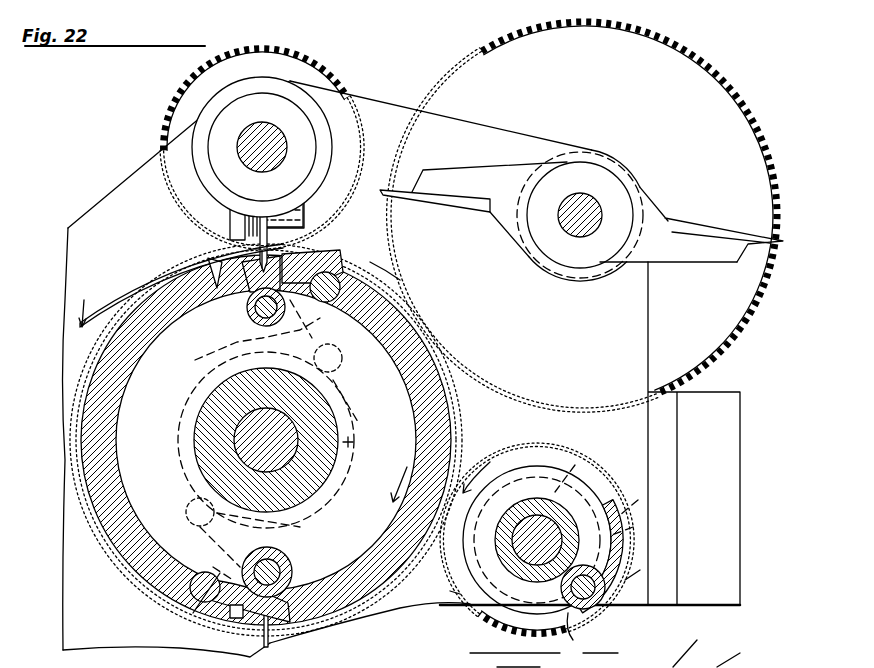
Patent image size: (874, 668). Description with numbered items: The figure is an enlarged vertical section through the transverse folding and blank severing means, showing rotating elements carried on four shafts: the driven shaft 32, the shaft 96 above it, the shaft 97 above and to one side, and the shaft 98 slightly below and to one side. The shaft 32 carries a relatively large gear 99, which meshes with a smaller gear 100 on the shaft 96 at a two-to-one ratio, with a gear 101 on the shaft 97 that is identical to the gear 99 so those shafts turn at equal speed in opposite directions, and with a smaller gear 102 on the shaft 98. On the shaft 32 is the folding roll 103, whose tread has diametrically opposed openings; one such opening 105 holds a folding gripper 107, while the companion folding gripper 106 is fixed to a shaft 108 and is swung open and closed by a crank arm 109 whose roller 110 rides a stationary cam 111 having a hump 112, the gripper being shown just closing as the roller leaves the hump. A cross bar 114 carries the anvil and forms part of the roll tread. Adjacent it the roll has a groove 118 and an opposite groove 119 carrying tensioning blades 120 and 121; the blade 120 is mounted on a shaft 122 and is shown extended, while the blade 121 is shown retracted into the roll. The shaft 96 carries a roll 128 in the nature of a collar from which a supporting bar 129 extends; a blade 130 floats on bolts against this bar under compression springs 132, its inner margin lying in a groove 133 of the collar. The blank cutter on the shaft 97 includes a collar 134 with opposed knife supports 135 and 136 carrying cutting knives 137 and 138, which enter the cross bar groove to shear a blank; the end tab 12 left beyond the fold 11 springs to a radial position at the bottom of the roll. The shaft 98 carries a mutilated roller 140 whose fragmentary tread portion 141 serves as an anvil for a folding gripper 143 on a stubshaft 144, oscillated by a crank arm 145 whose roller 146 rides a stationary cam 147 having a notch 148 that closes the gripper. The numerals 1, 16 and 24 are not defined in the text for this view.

The frame plate 16 is at (90, 248).
The end tab 12 is at (270, 644).
The folding roll 103 is at (100, 380).
The hump 112 is at (212, 366).
The roller 110 is at (352, 380).
The driven shaft 32 is at (255, 433).
The stationary cam 111 is at (351, 440).
The crank arm 109 is at (350, 350).
The groove 119 is at (190, 570).
The shaft 108 is at (214, 296).
The cross bar 114 is at (322, 242).
The tensioning blade 120 is at (318, 260).
The folding gripper 106 is at (258, 318).
The shaft 122 is at (318, 300).
The groove 118 is at (380, 263).
The supporting bar 129 is at (303, 197).
The blade 130 is at (300, 212).
The compression springs 132 is at (233, 220).
The groove 133 is at (268, 198).
The fold 11 is at (345, 636).
The opening 105 is at (300, 593).
The gripper 107 is at (288, 566).
The tensioning blade 121 is at (190, 612).
The gear 99 is at (118, 300).
The direction arrow 1 is at (470, 425).
The gear 100 is at (307, 73).
The roll 128 is at (302, 128).
The shaft 96 is at (263, 140).
The gear 101 is at (478, 72).
The knife support 135 is at (452, 178).
The cutting knife 137 is at (476, 212).
The collar 134 is at (578, 253).
The shaft 97 is at (592, 200).
The cutting knife 138 is at (713, 228).
The knife support 136 is at (712, 258).
The gear 102 is at (503, 610).
The shaft 98 is at (535, 535).
The mutilated roller 140 is at (585, 508).
The folding gripper 143 is at (585, 612).
The stubshaft 144 is at (571, 640).
The notch 148 is at (450, 591).
The stationary cam 147 is at (575, 465).
The roller 146 is at (638, 500).
The crank arm 145 is at (633, 527).
The tread portion 141 is at (640, 570).
The base 24 is at (605, 654).